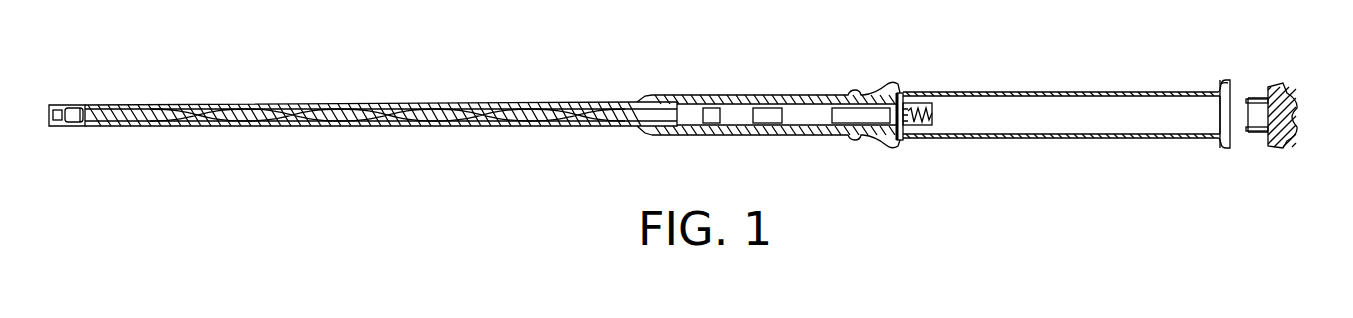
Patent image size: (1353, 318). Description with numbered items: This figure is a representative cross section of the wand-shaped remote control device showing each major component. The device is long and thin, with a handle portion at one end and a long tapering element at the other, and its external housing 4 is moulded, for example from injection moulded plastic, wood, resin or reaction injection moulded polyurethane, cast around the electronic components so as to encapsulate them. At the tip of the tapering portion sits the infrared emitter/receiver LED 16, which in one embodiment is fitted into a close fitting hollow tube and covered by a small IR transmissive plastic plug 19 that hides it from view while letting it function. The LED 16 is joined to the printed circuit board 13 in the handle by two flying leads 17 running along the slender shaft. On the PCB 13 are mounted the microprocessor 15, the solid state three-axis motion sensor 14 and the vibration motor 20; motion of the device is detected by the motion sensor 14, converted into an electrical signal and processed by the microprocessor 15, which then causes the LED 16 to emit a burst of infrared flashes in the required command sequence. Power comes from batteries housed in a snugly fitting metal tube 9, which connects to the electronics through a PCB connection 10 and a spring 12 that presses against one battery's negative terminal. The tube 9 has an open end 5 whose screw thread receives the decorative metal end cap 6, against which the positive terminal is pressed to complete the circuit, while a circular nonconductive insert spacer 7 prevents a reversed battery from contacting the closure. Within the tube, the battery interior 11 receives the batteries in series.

The remote control external housing 4 is at (661, 98).
The open end 5 is at (1222, 82).
The end cap 6 is at (1290, 120).
The nonconductive insert spacer 7 is at (1257, 98).
The metal tube 9 is at (1080, 127).
The printed circuit board connection 10 is at (892, 86).
The barrel interior 11 is at (1215, 117).
The spring 12 is at (926, 130).
The printed circuit board 13 is at (806, 110).
The motion sensor 14 is at (765, 124).
The microprocessor 15 is at (713, 124).
The infrared LED 16 is at (80, 107).
The flying leads 17 is at (345, 103).
The IR transmissive plastic plug 19 is at (56, 126).
The vibration motor 20 is at (860, 125).